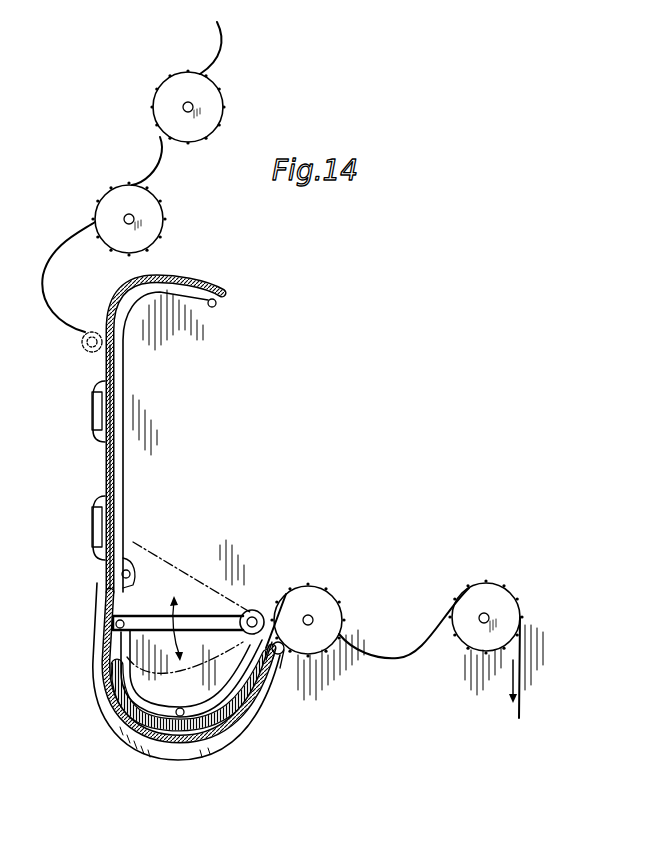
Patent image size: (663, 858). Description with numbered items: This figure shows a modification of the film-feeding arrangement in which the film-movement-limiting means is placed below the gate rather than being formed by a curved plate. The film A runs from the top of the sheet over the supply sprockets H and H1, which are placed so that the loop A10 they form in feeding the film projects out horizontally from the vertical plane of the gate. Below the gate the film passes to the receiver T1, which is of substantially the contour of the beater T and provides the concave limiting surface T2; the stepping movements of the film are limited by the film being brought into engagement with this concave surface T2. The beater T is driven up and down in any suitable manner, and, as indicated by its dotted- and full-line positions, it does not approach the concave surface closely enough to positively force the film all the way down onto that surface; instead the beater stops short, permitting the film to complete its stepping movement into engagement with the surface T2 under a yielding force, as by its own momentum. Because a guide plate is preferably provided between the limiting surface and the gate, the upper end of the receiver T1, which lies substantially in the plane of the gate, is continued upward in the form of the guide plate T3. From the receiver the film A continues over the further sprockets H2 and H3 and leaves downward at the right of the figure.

The strand A is at (222, 38).
The supply sprocket H is at (212, 105).
The supply sprocket H1 is at (153, 220).
The loop A10 is at (43, 282).
The feed roller H2 is at (303, 600).
The feed roller H3 is at (482, 595).
The beater T is at (223, 700).
The receiver T1 is at (150, 745).
The concave surface of the receiver T2 is at (190, 737).
The guide plate T3 is at (103, 597).